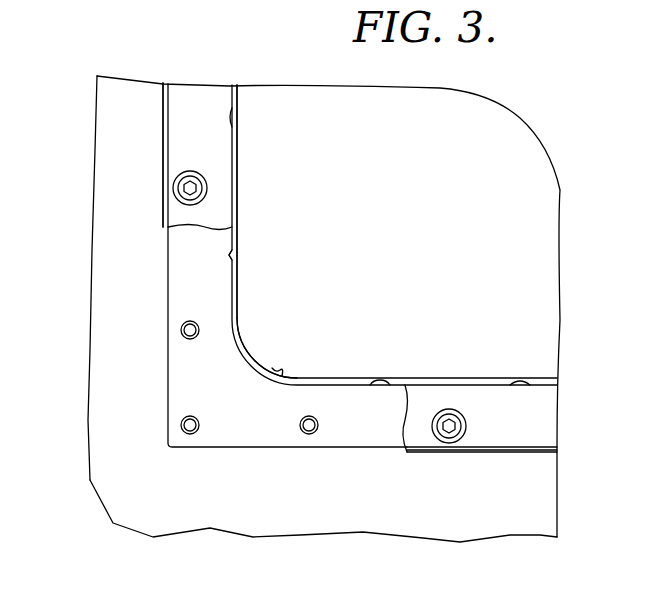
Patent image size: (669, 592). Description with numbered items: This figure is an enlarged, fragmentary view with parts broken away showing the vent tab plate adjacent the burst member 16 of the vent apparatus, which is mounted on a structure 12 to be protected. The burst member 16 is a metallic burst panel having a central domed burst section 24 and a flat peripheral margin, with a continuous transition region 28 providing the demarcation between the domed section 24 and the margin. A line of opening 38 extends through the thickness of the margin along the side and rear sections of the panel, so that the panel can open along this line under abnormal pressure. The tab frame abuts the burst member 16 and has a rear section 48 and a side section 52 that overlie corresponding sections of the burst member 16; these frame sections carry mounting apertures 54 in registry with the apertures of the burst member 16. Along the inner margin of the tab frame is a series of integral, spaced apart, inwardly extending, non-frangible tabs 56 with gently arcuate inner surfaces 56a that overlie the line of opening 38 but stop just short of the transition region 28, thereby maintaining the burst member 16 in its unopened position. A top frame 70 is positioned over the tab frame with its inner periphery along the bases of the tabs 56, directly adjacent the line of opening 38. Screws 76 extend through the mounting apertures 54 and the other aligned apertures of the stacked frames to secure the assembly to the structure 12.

The structure 12 is at (537, 490).
The burst member 16 is at (565, 190).
The central domed burst section 24 is at (490, 128).
The transition region 28 is at (237, 270).
The line of opening 38 is at (235, 237).
The rear section 48 is at (357, 432).
The side section 52 is at (180, 250).
The mounting apertures 54 is at (185, 340).
The tabs 56 is at (228, 258).
The arcuate inner surfaces 56a is at (290, 378).
The top frame 70 is at (540, 417).
The screws 76 is at (178, 178).